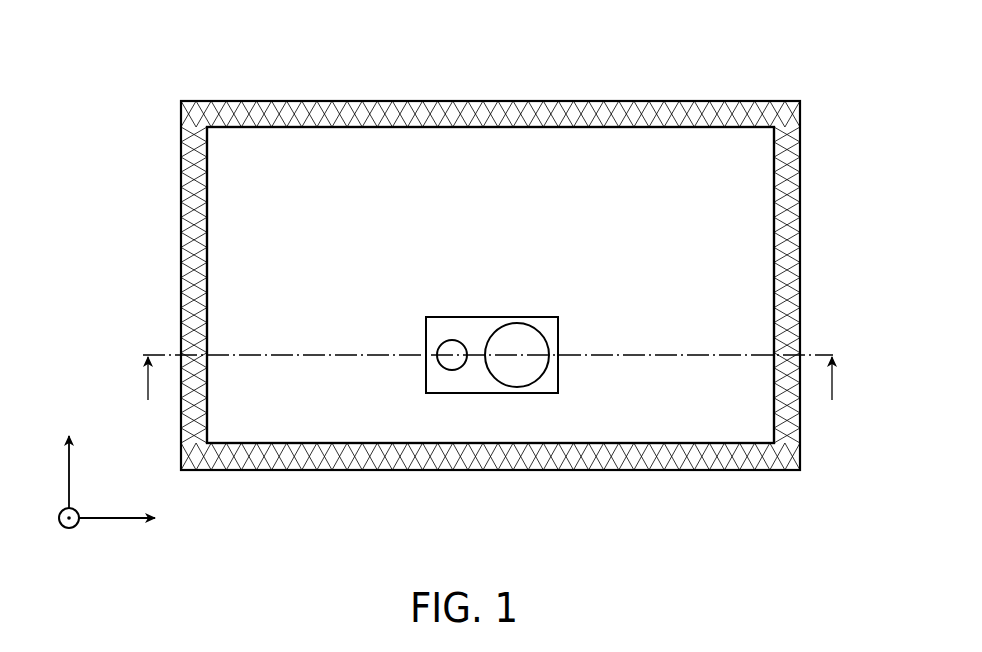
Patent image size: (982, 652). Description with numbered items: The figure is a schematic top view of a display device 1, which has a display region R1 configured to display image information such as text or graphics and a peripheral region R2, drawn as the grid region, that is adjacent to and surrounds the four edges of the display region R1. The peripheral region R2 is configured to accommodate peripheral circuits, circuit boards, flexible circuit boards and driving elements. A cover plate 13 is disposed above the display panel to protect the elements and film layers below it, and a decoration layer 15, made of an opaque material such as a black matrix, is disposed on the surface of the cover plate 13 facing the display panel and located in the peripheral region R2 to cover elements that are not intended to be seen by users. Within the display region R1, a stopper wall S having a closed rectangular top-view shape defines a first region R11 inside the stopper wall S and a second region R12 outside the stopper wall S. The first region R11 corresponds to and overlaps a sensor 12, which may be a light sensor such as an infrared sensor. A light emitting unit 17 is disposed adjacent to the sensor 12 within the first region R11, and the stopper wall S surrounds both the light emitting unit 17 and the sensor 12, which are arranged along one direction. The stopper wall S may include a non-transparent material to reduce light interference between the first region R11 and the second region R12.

The display device 1 is at (838, 53).
The cover plate 13 is at (181, 258).
The decoration layer 15 is at (195, 298).
The display region R1 is at (548, 44).
The peripheral region R2 is at (380, 117).
The first region R11 is at (550, 332).
The second region R12 is at (464, 172).
The stopper wall S is at (558, 377).
The light emitting unit 17 is at (462, 368).
The sensor 12 is at (540, 382).